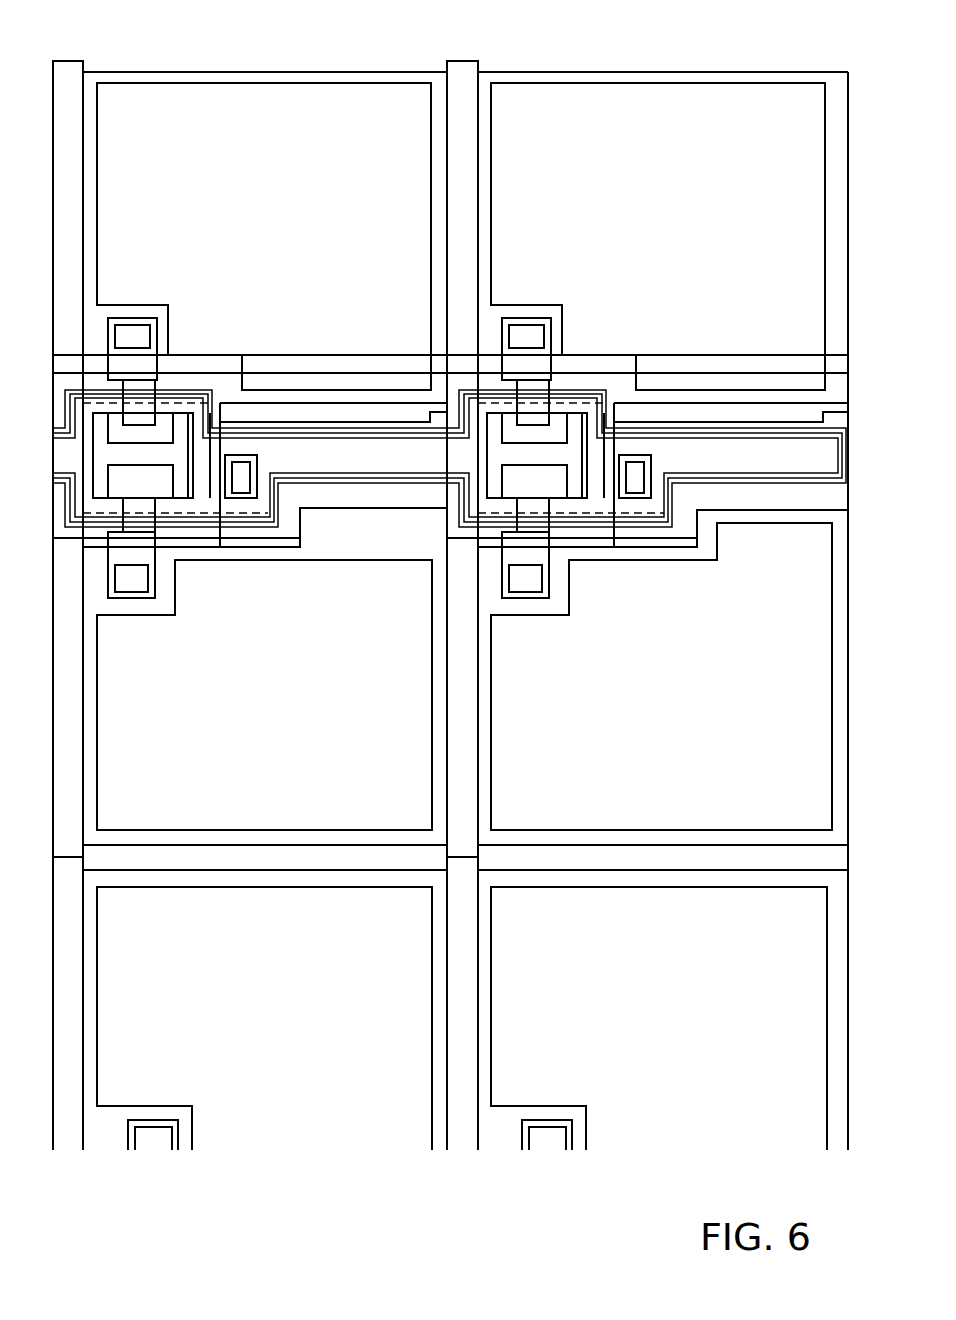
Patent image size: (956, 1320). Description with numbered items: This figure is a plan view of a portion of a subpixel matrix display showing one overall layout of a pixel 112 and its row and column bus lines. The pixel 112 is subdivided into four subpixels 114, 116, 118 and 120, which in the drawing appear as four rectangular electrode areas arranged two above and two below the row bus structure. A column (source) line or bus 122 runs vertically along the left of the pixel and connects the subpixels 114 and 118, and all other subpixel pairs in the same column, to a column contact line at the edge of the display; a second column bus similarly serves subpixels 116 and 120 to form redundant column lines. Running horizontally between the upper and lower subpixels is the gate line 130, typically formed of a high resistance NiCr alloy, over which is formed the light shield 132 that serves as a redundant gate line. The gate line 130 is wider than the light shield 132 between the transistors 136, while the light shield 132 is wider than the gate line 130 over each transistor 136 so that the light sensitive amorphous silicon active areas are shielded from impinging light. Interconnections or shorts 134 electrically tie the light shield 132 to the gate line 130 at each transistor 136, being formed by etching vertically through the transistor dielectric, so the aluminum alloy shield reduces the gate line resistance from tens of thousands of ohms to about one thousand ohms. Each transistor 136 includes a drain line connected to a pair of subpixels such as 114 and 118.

The pixel 112 is at (432, 66).
The subpixel 114 is at (318, 228).
The subpixel 116 is at (698, 222).
The subpixel 118 is at (318, 724).
The subpixel 120 is at (705, 719).
The column (source) line or bus 122 is at (75, 216).
The gate line 130 is at (768, 540).
The light shield or redundant gate line 132 is at (185, 392).
The interconnection or short 134 is at (243, 473).
The transistor 136 is at (179, 352).